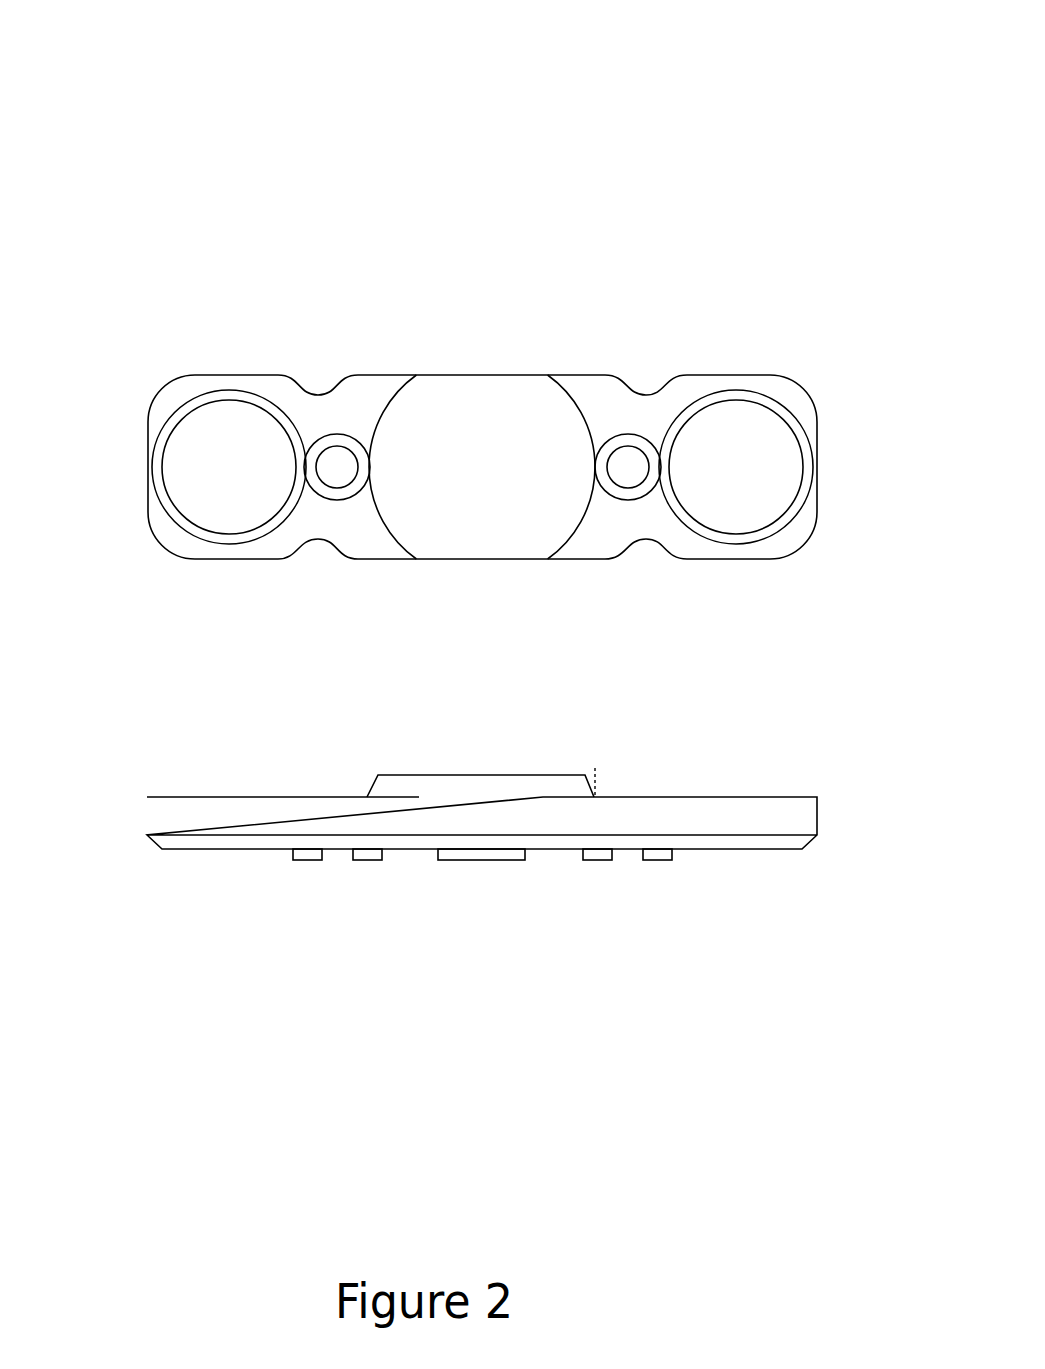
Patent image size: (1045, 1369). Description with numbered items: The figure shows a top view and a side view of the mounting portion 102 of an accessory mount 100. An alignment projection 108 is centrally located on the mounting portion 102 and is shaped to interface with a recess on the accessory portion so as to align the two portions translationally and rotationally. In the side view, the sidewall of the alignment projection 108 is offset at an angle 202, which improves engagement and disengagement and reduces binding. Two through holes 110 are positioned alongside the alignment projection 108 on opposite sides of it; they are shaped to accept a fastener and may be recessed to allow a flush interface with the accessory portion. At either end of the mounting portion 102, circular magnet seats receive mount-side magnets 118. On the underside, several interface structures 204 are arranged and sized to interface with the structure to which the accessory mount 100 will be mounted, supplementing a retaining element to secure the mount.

The accessory mount 100 is at (145, 58).
The mounting portion 102 is at (836, 398).
The alignment projection 108 is at (480, 397).
The through holes 110 is at (333, 460).
The mount-side magnets 118 is at (228, 462).
The angle 202 is at (590, 770).
The interface structures 204 is at (310, 862).